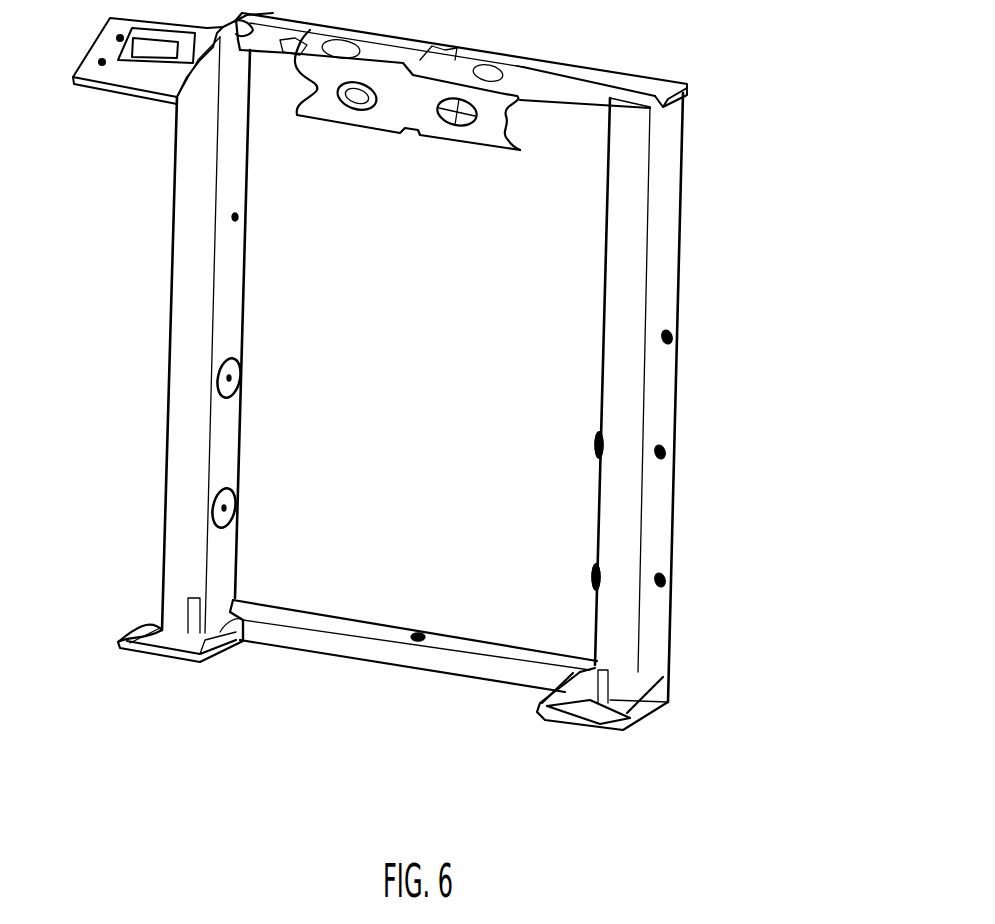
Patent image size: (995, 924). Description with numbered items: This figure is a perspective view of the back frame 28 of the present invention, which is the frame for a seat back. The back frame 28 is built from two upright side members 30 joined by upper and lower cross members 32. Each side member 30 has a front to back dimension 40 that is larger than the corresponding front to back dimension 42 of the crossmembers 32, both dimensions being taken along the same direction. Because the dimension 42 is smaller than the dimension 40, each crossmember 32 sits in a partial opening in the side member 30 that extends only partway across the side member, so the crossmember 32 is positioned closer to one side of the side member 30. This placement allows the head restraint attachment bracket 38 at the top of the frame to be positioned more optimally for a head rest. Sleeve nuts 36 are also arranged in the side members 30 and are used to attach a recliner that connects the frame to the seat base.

The back frame 28 is at (718, 293).
The side members 30 is at (168, 428).
The cross members 32 is at (566, 104).
The sleeve nuts 36 is at (593, 587).
The head restraint attachment bracket 38 is at (365, 124).
The dimension 40 is at (656, 187).
The dimension 42 is at (638, 73).